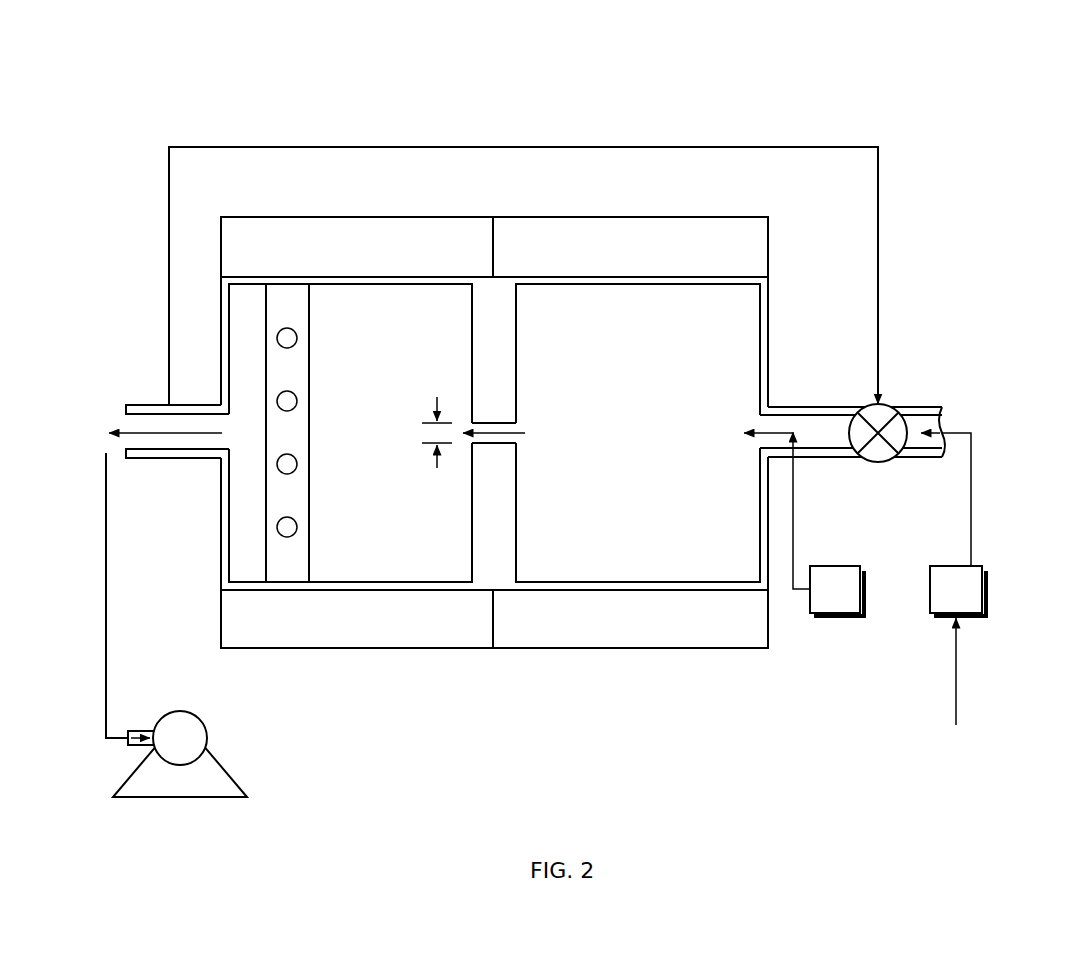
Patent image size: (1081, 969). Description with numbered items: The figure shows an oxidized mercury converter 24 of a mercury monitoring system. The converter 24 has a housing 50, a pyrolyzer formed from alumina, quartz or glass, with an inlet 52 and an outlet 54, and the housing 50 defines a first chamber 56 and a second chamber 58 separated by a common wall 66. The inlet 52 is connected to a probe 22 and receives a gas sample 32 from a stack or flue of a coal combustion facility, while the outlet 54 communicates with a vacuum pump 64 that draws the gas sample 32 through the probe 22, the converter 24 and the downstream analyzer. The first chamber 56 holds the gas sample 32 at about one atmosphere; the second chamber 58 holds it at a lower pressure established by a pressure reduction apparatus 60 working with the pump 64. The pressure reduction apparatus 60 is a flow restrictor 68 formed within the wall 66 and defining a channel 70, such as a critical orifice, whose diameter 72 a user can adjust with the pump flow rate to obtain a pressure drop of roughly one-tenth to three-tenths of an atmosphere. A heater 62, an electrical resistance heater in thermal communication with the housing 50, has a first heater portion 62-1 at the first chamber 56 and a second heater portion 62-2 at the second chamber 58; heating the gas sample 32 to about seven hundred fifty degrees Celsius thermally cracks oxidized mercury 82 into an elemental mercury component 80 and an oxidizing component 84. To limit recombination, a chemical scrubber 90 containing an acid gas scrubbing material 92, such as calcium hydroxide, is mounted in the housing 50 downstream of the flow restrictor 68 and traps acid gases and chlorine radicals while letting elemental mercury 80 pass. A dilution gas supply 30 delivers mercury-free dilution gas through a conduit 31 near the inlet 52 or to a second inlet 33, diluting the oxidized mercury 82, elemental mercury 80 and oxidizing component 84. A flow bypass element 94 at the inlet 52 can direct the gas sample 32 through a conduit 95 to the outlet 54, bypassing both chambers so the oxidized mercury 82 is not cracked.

The probe 22 is at (968, 600).
The oxidized mercury converter 24 is at (751, 97).
The dilution gas supply 30 is at (847, 600).
The conduit 31 is at (795, 557).
The gas sample 32 is at (971, 490).
The second inlet 33 is at (809, 472).
The housing 50 is at (812, 294).
The inlet 52 is at (855, 470).
The outlet 54 is at (168, 460).
The first chamber 56 is at (644, 582).
The second chamber 58 is at (383, 582).
The pressure reduction apparatus 60 is at (458, 465).
The heater 62 is at (494, 403).
The first heater portion 62-1 is at (651, 259).
The second heater portion 62-2 is at (381, 259).
The vacuum pump 64 is at (192, 749).
The wall 66 is at (485, 307).
The flow restrictor 68 is at (496, 465).
The channel 70 is at (493, 422).
The diameter 72 is at (433, 403).
The elemental mercury component 80 is at (609, 465).
The oxidized mercury 82 is at (676, 507).
The oxidizing component 84 is at (346, 562).
The chemical scrubber 90 is at (280, 560).
The acid gas scrubbing material 92 is at (280, 513).
The flow bypass element 94 is at (884, 404).
The conduit 95 is at (625, 147).